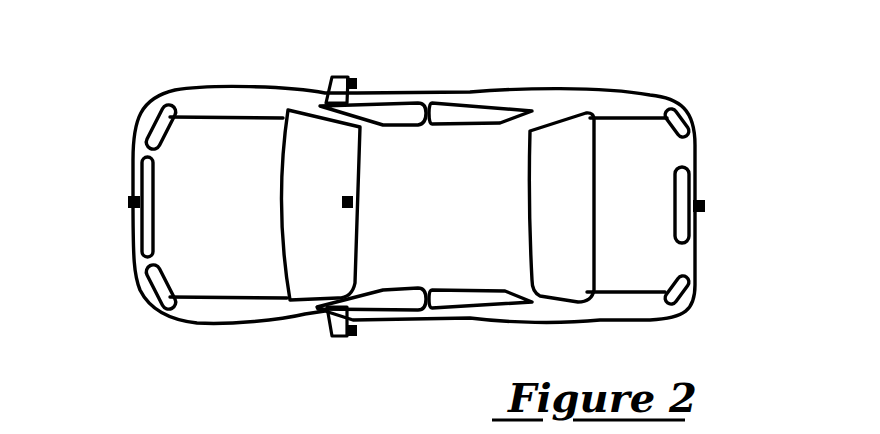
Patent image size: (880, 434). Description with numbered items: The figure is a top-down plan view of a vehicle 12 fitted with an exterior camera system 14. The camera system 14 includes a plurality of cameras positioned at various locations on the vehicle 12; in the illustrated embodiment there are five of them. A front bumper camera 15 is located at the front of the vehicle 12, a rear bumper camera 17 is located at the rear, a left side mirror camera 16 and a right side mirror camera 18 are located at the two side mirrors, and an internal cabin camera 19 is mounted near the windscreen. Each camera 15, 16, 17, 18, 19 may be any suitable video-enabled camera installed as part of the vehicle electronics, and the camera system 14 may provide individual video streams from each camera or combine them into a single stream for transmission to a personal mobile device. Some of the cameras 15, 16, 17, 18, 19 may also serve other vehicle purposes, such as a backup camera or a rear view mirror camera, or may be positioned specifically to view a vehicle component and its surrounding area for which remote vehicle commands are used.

The vehicle 12 is at (88, 73).
The camera system 14 is at (775, 37).
The front bumper camera 15 is at (125, 196).
The left side mirror camera 16 is at (362, 338).
The rear bumper camera 17 is at (711, 200).
The right side mirror camera 18 is at (362, 76).
The internal cabin camera 19 is at (340, 196).